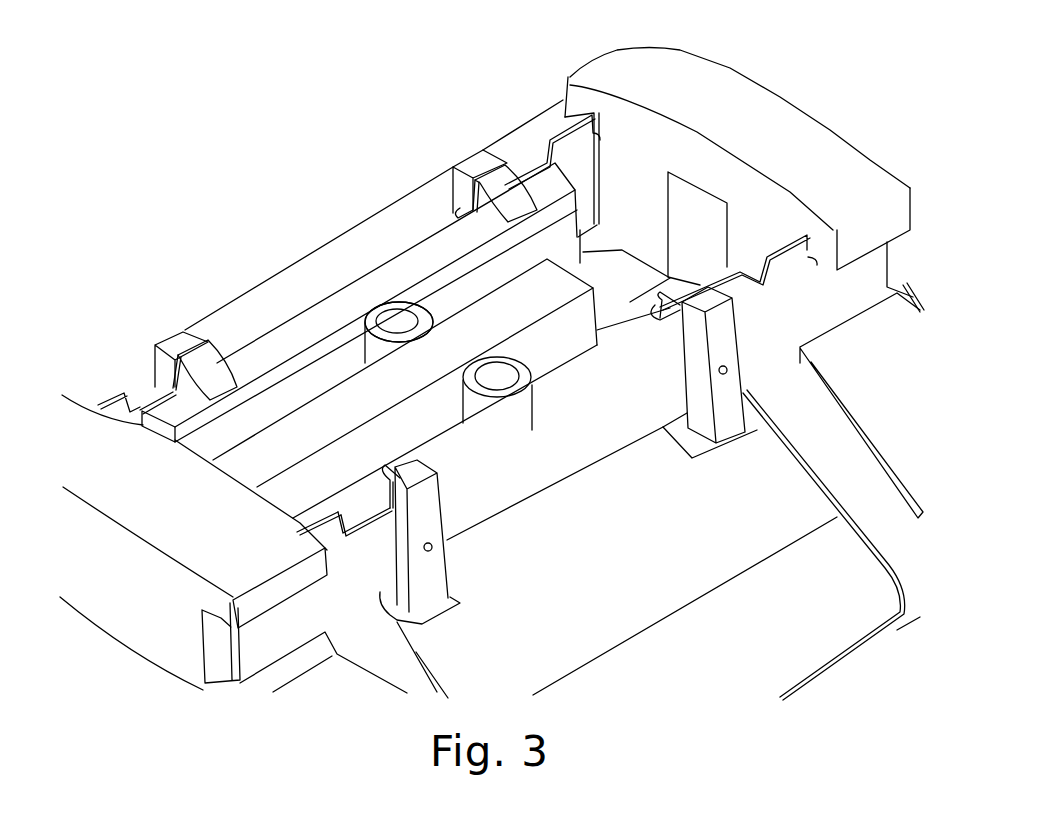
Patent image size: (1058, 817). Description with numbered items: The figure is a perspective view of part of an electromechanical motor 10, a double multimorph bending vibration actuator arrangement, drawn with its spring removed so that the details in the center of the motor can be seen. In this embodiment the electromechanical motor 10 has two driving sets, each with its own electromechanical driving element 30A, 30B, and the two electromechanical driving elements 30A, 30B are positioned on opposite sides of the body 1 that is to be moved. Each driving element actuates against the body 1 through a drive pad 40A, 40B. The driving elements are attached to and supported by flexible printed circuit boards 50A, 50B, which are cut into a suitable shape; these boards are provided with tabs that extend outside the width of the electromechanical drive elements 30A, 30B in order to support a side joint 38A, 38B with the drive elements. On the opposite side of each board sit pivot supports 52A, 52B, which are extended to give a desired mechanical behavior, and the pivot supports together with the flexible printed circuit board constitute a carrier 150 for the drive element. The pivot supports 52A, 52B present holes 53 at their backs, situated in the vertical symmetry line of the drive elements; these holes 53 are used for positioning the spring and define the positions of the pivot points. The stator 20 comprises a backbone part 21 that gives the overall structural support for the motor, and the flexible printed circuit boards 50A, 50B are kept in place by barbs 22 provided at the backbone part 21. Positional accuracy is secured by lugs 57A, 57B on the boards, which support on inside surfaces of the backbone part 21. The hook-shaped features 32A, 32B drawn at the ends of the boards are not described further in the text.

The electromechanical motor 10 is at (290, 150).
The stator 20 is at (755, 66).
The backbone part 21 is at (778, 100).
The barbs 22 is at (832, 257).
The body 1 is at (445, 305).
The electromechanical driving element 30A is at (502, 507).
The electromechanical driving element 30B is at (298, 328).
The drive pad 40A is at (520, 395).
The drive pad 40B is at (378, 305).
The pivot support 52A is at (437, 597).
The pivot support 52B is at (470, 163).
The side joint 38A is at (365, 527).
The side joint 38B is at (490, 190).
The front spring hooks 32A is at (355, 487).
The rear spring hooks 32B is at (467, 210).
The lug 57A is at (325, 537).
The lug 57B is at (560, 127).
The flexible printed circuit board 50A is at (827, 477).
The flexible printed circuit board 50B is at (590, 193).
The holes 53 is at (433, 545).
The carrier 150 is at (397, 672).